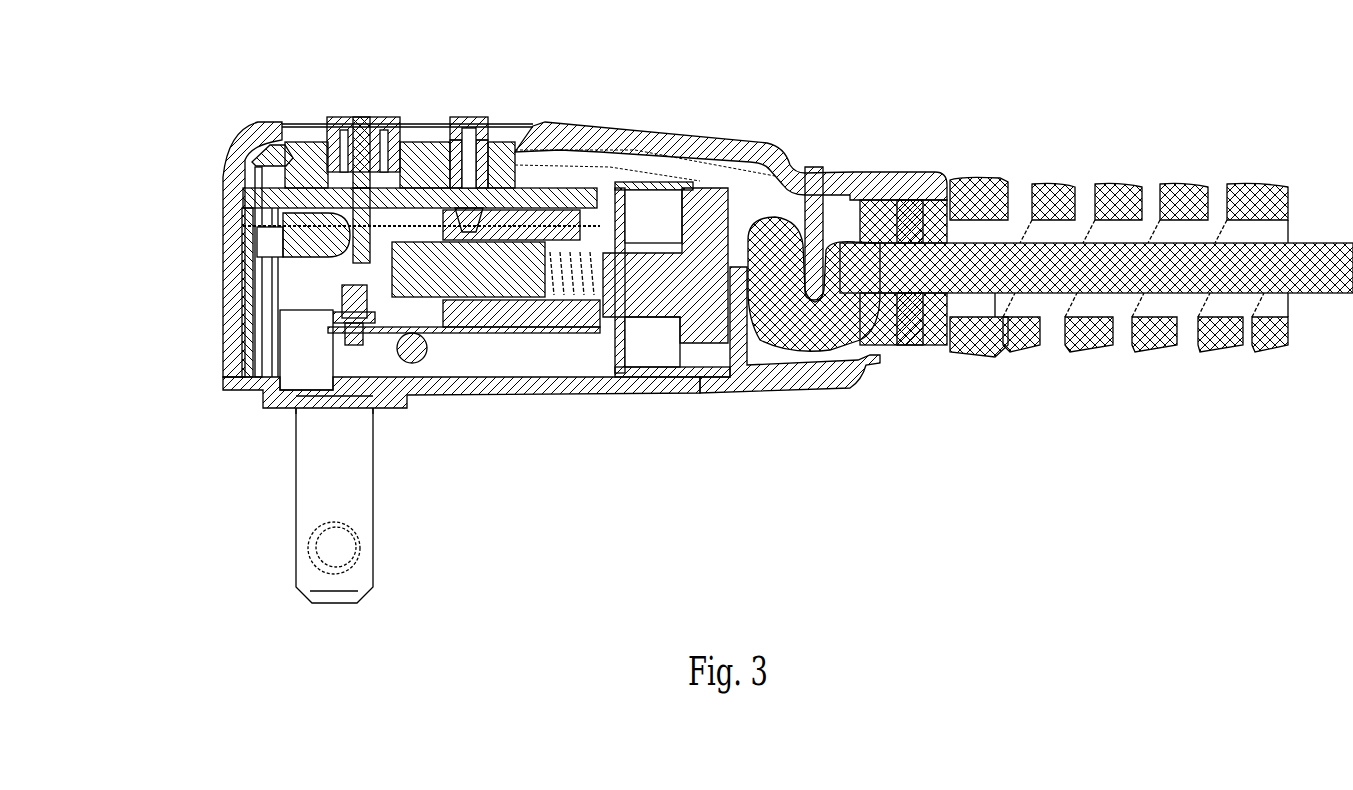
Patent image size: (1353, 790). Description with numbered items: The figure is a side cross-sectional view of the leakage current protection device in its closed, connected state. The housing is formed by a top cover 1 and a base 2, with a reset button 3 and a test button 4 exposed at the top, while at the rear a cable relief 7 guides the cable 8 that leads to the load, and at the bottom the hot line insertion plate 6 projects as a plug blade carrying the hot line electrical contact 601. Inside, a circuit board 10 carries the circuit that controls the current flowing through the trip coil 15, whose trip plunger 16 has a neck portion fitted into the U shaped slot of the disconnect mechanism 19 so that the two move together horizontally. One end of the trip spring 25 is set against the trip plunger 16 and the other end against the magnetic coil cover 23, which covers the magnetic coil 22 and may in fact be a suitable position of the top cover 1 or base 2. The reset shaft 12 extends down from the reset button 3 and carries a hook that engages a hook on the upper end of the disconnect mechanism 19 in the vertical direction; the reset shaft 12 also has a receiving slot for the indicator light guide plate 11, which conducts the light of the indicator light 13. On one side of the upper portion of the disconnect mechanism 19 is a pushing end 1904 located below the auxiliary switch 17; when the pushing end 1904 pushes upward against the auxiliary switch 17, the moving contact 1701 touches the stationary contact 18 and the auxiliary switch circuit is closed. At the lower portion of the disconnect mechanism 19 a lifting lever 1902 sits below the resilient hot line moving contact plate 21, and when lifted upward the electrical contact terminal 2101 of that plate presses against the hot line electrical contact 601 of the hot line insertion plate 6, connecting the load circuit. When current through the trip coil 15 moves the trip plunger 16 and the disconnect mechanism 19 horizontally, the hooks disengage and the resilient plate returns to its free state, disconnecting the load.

The top cover 1 is at (220, 207).
The base 2 is at (245, 345).
The reset button 3 is at (377, 115).
The test button 4 is at (493, 112).
The hot line insertion plate 6 is at (310, 480).
The cable relief 7 is at (1057, 183).
The cable 8 is at (967, 178).
The circuit board 10 is at (257, 140).
The indicator light guide plate 11 is at (322, 127).
The reset shaft 12 is at (265, 270).
The indicator light 13 is at (232, 222).
The trip coil 15 is at (778, 133).
The trip plunger 16 is at (510, 300).
The auxiliary switch 17 is at (467, 118).
The stationary contact of auxiliary switch 18 is at (583, 150).
The disconnect mechanism 19 is at (468, 345).
The hot line moving contact plate 21 is at (603, 367).
The magnetic coil 22 is at (815, 170).
The magnetic coil cover 23 is at (713, 380).
The trip spring 25 is at (597, 367).
The hot line electrical contact 601 is at (300, 280).
The moving contact of auxiliary switch 1701 is at (640, 195).
The lifting lever of the disconnect mechanism 1902 is at (412, 360).
The pushing end of the disconnect mechanism 1904 is at (378, 160).
The electrical contact terminal of the hot line moving contact plate 2101 is at (293, 414).